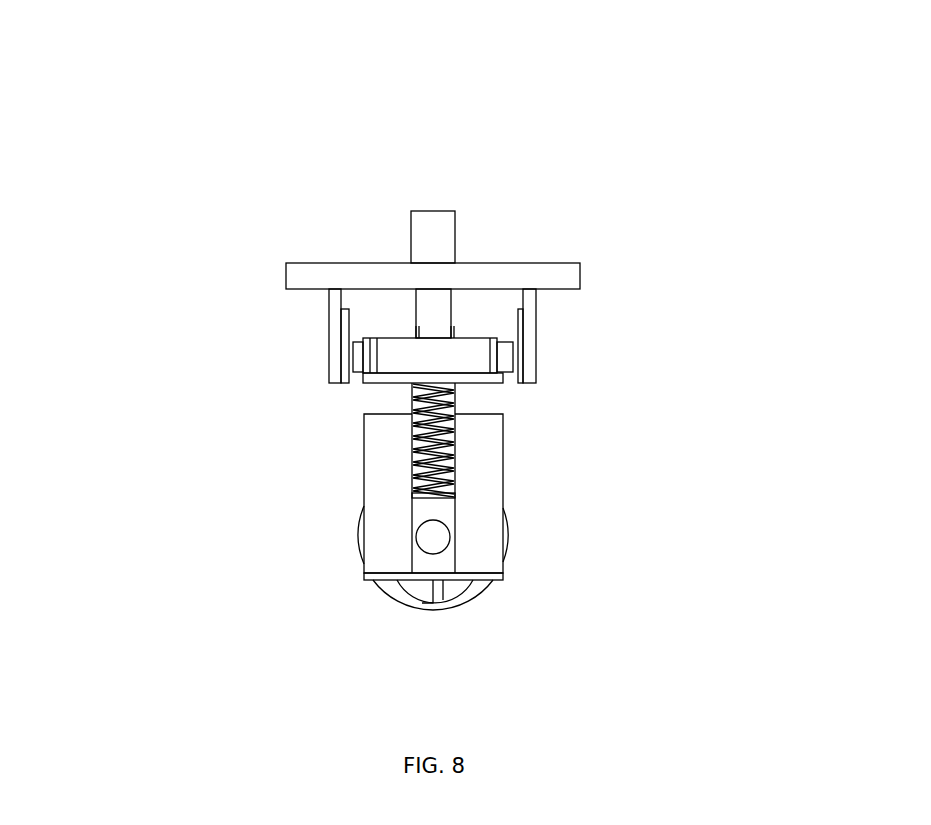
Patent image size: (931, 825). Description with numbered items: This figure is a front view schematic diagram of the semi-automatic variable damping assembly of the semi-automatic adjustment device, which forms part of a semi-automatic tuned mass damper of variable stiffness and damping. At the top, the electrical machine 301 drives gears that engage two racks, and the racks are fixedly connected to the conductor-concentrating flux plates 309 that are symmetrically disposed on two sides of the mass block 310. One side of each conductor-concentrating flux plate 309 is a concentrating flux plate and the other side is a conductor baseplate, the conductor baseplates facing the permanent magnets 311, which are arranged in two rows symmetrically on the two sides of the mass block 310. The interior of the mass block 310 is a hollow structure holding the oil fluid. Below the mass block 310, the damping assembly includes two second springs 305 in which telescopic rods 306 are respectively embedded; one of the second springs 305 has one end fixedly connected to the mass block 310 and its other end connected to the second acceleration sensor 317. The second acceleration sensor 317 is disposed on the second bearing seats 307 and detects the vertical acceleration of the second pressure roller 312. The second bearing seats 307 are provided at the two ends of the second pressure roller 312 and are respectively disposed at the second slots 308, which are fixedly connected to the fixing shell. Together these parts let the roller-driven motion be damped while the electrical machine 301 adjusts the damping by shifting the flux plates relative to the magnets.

The electrical machine 301 is at (432, 229).
The second springs 305 is at (412, 417).
The telescopic rods 306 is at (412, 483).
The second bearing seats 307 is at (433, 537).
The second slots 308 is at (400, 562).
The conductor-concentrating flux plates 309 is at (528, 302).
The mass block 310 is at (470, 353).
The permanent magnets 311 is at (507, 359).
The second pressure roller 312 is at (452, 602).
The second acceleration sensor 317 is at (412, 492).